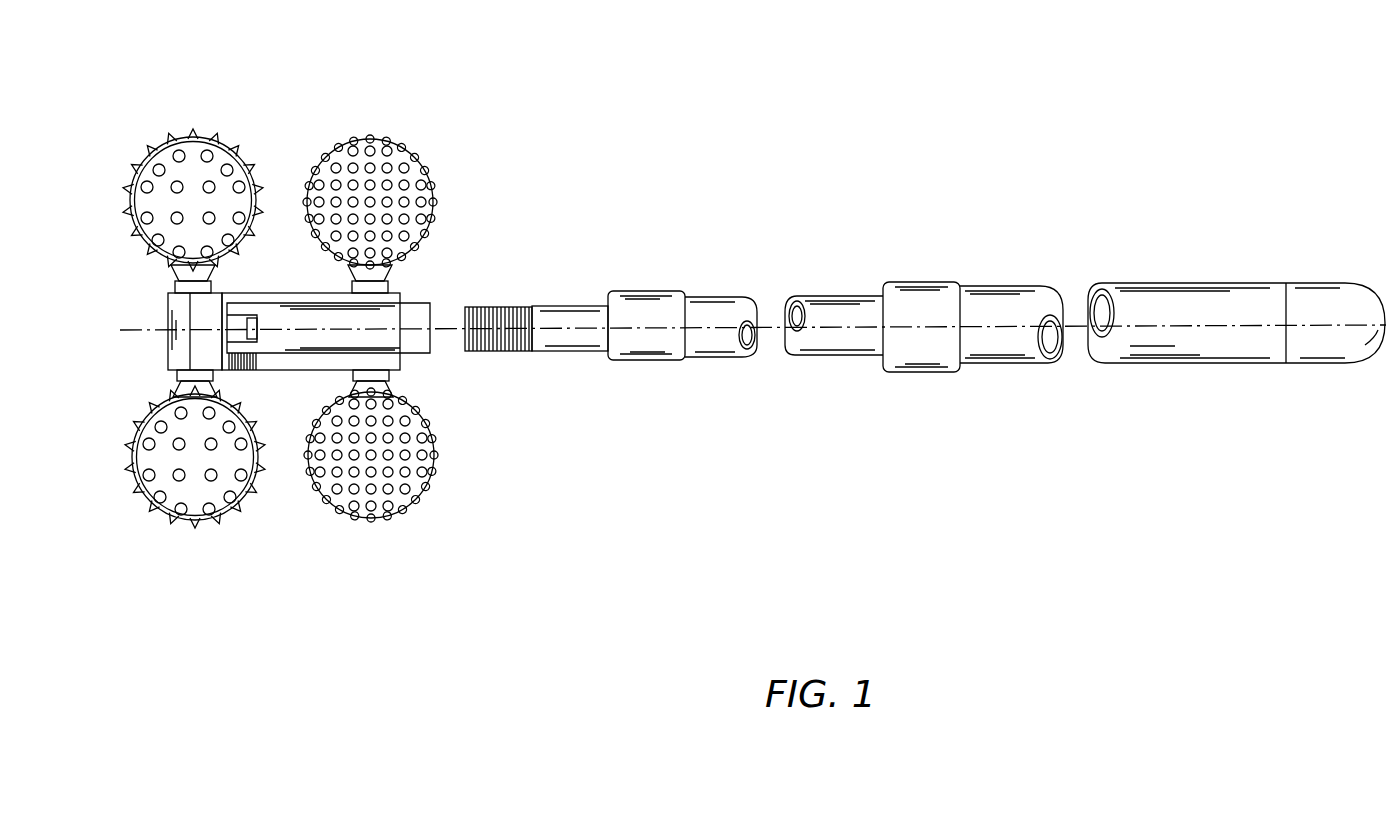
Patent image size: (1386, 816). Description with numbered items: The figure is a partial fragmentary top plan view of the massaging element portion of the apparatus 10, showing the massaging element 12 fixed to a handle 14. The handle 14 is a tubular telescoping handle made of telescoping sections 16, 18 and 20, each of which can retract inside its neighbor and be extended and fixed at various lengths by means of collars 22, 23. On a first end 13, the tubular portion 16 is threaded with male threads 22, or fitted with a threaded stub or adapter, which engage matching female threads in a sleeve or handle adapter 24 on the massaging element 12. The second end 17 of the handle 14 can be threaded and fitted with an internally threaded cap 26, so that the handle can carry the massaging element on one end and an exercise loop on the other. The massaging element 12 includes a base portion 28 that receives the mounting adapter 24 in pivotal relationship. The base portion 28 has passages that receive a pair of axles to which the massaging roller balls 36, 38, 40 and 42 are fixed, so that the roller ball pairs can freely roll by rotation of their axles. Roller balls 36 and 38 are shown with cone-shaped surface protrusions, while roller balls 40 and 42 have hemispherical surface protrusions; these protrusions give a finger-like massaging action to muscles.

The apparatus 10 is at (813, 244).
The massaging element 12 is at (413, 301).
The first end 13 is at (460, 343).
The handle 14 is at (1163, 283).
The telescoping section 16 is at (576, 306).
The second end 17 is at (1286, 283).
The telescoping section 18 is at (727, 297).
The telescoping section 20 is at (1016, 286).
The collar 22 is at (515, 307).
The collar 23 is at (925, 282).
The handle adapter 24 is at (416, 368).
The cap 26 is at (1345, 283).
The base portion 28 is at (290, 293).
The massaging roller ball 36 is at (196, 134).
The massaging roller ball 38 is at (148, 404).
The massaging roller ball 40 is at (370, 136).
The massaging roller ball 42 is at (436, 462).